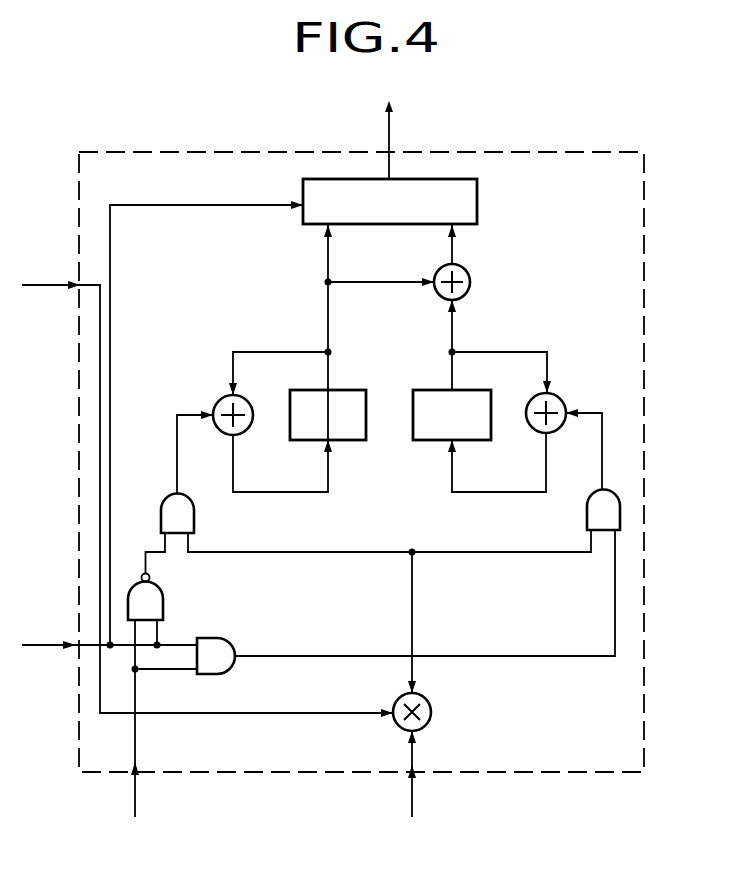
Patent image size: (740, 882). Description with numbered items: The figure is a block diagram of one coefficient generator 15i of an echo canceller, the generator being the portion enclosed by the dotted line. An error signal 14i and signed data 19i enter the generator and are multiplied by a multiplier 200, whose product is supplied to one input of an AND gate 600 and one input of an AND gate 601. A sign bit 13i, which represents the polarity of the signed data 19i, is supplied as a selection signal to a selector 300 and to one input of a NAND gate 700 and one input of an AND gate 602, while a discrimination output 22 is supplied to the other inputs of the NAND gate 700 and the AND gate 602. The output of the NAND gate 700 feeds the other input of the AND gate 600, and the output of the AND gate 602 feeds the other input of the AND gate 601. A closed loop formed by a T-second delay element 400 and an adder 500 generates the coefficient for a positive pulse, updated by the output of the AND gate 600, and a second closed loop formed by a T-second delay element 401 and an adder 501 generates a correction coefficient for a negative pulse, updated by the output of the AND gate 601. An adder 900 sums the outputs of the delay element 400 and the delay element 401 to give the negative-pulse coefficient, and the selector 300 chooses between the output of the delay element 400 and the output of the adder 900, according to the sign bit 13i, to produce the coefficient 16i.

The coefficient generator 15i is at (645, 198).
The selector 300 is at (480, 193).
The coefficient 16i is at (387, 134).
The adder 900 is at (470, 286).
The T-second delay element 400 is at (352, 388).
The T-second delay element 401 is at (428, 388).
The adder 500 is at (218, 399).
The adder 501 is at (561, 398).
The AND gate 600 is at (195, 520).
The AND gate 601 is at (586, 517).
The NAND gate 700 is at (165, 606).
The AND gate 602 is at (222, 638).
The multiplier 200 is at (431, 713).
The signed data 19i is at (44, 284).
The sign bit 13i is at (45, 643).
The discrimination output 22 is at (133, 800).
The error signal 14i is at (409, 800).